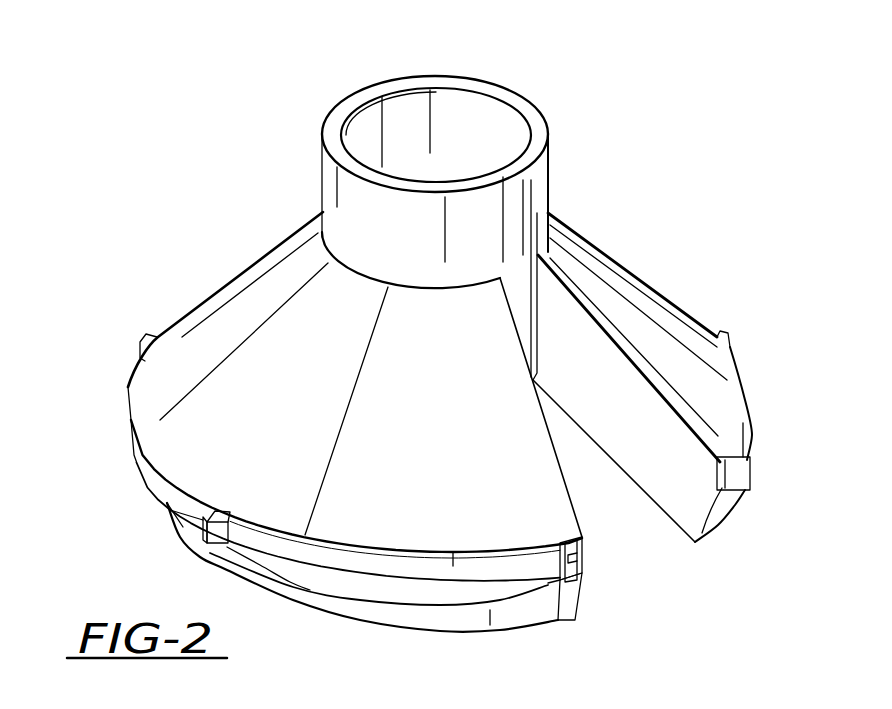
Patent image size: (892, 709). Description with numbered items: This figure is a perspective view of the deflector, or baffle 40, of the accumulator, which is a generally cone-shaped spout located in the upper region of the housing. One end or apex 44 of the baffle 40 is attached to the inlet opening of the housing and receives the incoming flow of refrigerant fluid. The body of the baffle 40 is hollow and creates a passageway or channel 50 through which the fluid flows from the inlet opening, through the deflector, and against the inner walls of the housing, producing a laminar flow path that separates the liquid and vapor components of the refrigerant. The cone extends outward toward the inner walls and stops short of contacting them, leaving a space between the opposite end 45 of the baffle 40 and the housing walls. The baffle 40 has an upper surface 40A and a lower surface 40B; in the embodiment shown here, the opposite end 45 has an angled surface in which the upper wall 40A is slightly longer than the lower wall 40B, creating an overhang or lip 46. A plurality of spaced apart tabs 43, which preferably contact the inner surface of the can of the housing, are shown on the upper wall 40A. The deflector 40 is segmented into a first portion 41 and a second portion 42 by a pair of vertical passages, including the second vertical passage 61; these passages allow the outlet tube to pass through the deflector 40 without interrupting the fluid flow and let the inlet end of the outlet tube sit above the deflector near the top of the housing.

The baffle 40 is at (212, 226).
The upper surface 40A is at (150, 470).
The lower surface 40B is at (230, 573).
The first portion 41 is at (157, 388).
The second portion 42 is at (662, 325).
The spaced apart tabs 43 is at (751, 480).
The apex 44 is at (541, 127).
The opposite end 45 is at (412, 570).
The lip 46 is at (150, 510).
The channel 50 is at (418, 125).
The second vertical passage 61 is at (625, 562).